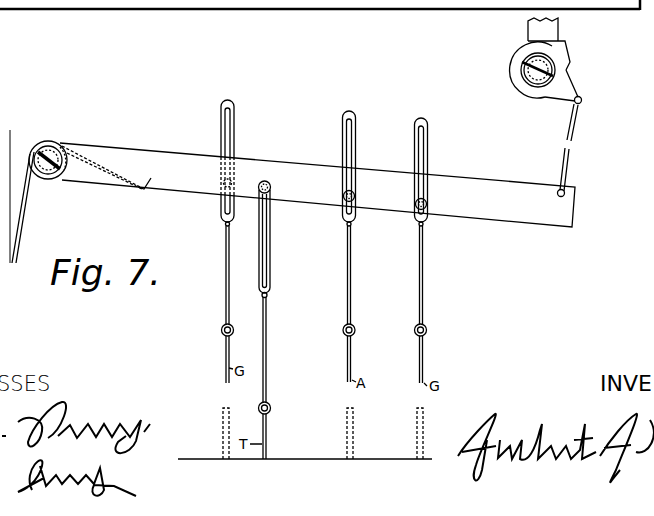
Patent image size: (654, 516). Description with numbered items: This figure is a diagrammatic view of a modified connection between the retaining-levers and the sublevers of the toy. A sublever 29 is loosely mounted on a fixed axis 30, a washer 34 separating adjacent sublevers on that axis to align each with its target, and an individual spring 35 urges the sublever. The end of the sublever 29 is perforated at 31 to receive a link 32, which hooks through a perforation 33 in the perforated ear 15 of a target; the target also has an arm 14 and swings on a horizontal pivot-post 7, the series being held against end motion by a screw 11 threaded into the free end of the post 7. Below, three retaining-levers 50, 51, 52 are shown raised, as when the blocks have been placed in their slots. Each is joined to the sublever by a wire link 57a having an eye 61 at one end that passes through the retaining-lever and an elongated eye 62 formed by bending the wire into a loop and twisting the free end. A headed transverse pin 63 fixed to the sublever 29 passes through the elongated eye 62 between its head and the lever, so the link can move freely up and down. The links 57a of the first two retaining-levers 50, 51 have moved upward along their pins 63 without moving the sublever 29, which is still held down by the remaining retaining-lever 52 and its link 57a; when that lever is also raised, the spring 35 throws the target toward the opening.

The pivot-post 7 is at (528, 56).
The screw 11 is at (515, 84).
The arm 14 is at (560, 30).
The perforated ear 15 is at (548, 100).
The sublever 29 is at (317, 185).
The fixed axis 30 is at (51, 150).
The perforation 31 is at (565, 192).
The link 32 is at (570, 131).
The perforation 33 is at (582, 99).
The washer 34 is at (55, 178).
The spring 35 is at (22, 227).
The retaining-lever 50 is at (424, 360).
The retaining-lever 51 is at (352, 355).
The retaining-lever 52 is at (225, 360).
The wire link 57a is at (417, 262).
The eye 61 is at (430, 139).
The elongated eye 62 is at (356, 140).
The transverse pin 63 is at (271, 187).